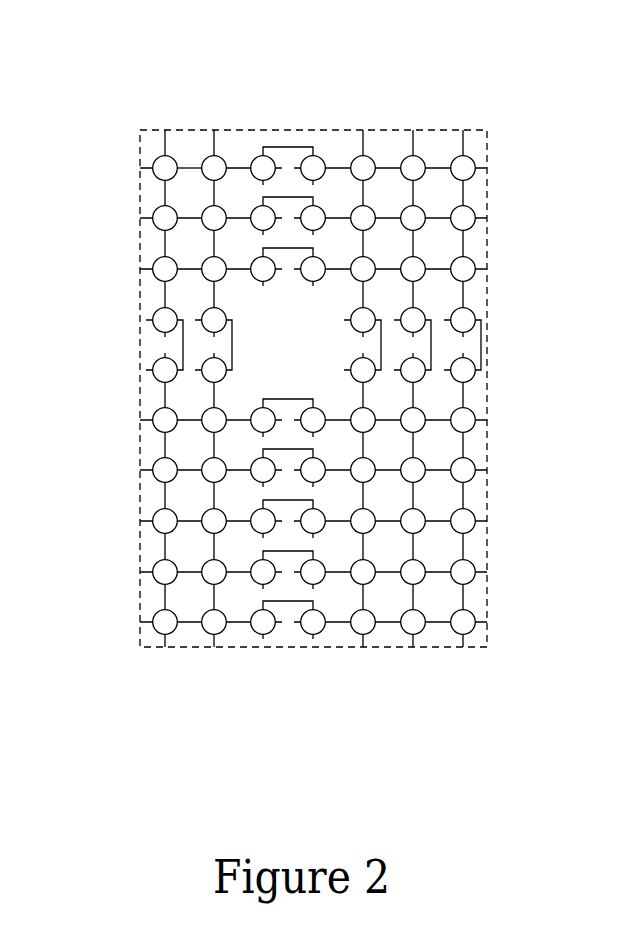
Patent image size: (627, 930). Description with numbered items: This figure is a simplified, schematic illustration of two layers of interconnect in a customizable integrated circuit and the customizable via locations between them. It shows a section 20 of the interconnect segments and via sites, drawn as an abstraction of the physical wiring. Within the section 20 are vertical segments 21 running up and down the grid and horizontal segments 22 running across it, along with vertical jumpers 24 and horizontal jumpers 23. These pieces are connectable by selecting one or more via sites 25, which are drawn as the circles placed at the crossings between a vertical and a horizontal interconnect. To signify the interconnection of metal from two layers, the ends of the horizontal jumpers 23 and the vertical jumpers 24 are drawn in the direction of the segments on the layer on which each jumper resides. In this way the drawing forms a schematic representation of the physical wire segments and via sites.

The section 20 is at (138, 295).
The vertical segments 21 is at (463, 143).
The horizontal segments 22 is at (189, 166).
The horizontal jumpers 23 is at (484, 343).
The vertical jumpers 24 is at (302, 142).
The via sites 25 is at (473, 533).